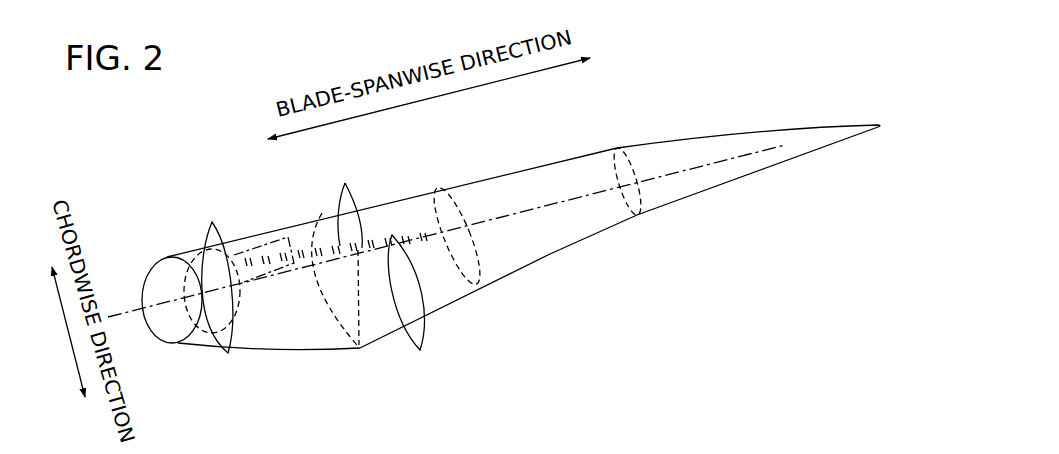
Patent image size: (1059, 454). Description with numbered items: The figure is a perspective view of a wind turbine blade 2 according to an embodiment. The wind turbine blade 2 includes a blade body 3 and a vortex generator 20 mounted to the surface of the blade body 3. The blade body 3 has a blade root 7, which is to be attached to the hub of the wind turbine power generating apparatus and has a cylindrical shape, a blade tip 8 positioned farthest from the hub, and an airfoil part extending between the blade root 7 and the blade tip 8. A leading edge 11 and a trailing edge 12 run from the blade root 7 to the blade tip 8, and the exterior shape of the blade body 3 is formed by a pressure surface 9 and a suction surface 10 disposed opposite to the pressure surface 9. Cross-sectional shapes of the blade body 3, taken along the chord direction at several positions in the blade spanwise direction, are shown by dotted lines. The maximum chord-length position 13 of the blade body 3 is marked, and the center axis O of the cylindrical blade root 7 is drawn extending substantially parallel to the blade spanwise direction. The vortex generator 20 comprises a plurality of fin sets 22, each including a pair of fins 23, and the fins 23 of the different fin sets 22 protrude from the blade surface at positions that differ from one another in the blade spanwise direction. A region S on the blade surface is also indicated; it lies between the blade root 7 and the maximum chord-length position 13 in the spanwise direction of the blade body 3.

The wind turbine blade 2 is at (523, 189).
The blade body 3 is at (570, 170).
The blade root 7 is at (175, 344).
The blade tip 8 is at (880, 122).
The pressure surface 9 is at (392, 303).
The suction surface 10 is at (437, 277).
The leading edge 11 is at (497, 172).
The trailing edge 12 is at (530, 264).
The maximum chord-length position 13 is at (318, 216).
The vortex generator 20 is at (383, 216).
The fin sets 22 is at (212, 222).
The fins 23 is at (228, 353).
The center axis O is at (118, 313).
The region S is at (260, 243).